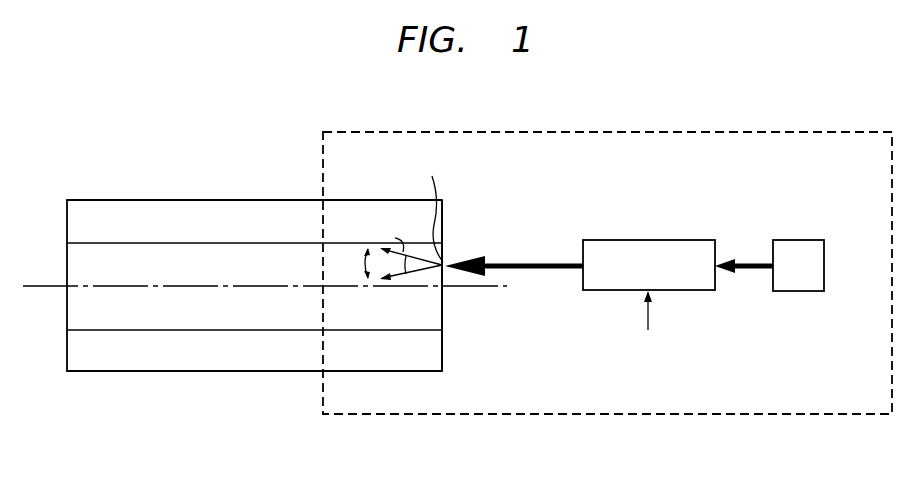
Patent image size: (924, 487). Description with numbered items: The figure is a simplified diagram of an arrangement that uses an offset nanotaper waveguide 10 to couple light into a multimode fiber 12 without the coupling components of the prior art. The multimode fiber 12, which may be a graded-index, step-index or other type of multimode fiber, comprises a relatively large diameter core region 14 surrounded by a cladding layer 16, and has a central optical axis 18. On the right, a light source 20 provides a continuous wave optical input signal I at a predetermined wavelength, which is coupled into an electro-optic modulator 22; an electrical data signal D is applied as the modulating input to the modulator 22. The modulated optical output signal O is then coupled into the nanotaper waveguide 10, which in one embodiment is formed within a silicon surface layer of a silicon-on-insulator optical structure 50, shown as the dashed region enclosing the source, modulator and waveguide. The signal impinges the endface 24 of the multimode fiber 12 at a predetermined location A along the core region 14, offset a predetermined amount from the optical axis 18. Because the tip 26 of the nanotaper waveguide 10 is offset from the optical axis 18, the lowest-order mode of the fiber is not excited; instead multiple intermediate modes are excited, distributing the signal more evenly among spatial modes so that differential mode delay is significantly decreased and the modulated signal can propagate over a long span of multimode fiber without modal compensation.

The nanotaper waveguide 10 is at (538, 271).
The multimode fiber 12 is at (134, 211).
The core region 14 is at (168, 310).
The cladding layer 16 is at (235, 211).
The central optical axis 18 is at (39, 288).
The light source 20 is at (825, 267).
The electro-optic modulator 22 is at (655, 240).
The endface 24 is at (444, 315).
The tip 26 is at (447, 260).
The SOI-based optical structure 50 is at (831, 415).